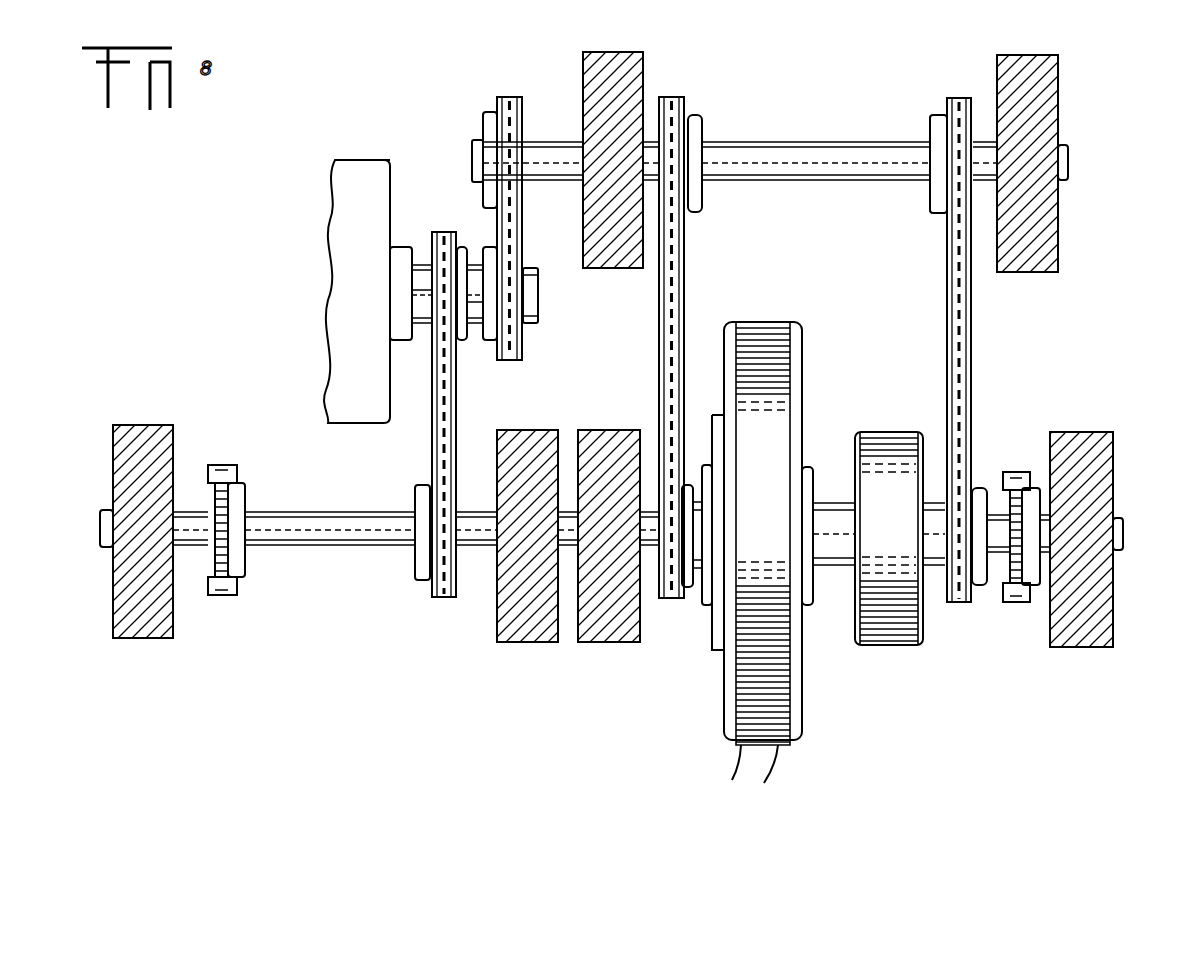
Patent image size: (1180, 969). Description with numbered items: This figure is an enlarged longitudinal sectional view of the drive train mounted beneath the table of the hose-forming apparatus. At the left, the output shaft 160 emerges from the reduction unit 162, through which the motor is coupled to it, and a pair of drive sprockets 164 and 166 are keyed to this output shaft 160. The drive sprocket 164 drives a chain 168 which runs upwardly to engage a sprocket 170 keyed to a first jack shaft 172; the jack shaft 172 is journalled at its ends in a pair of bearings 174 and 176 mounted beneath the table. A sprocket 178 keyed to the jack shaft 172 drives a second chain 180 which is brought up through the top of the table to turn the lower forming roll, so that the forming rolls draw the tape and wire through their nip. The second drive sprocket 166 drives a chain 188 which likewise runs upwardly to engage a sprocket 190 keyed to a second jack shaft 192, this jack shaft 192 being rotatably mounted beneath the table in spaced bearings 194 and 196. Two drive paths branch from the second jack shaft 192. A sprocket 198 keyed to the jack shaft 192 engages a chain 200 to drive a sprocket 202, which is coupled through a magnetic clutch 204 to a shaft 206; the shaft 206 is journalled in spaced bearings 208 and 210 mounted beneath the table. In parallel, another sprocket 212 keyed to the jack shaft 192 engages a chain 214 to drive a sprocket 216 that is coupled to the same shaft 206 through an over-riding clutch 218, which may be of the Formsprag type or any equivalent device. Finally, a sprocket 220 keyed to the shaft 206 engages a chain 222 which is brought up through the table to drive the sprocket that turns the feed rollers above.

The output shaft 160 is at (425, 292).
The reduction unit 162 is at (345, 200).
The drive sprocket 164 is at (462, 255).
The second drive sprocket 166 is at (488, 332).
The chain 168 is at (435, 395).
The sprocket 170 is at (425, 565).
The first jack shaft 172 is at (320, 525).
The bearing 174 is at (140, 612).
The bearing 176 is at (527, 620).
The sprocket 178 is at (238, 500).
The second chain 180 is at (240, 588).
The chain 188 is at (518, 240).
The sprocket 190 is at (488, 125).
The second jack shaft 192 is at (798, 157).
The bearing 194 is at (612, 75).
The bearing 196 is at (1025, 65).
The sprocket 198 is at (700, 128).
The chain 200 is at (660, 323).
The sprocket 202 is at (688, 575).
The magnetic clutch 204 is at (768, 697).
The shaft 206 is at (1121, 528).
The bearing 208 is at (612, 620).
The bearing 210 is at (1078, 620).
The sprocket 212 is at (938, 125).
The chain 214 is at (965, 345).
The sprocket 216 is at (977, 572).
The over-riding clutch 218 is at (892, 620).
The sprocket 220 is at (1031, 572).
The chain 222 is at (1005, 480).